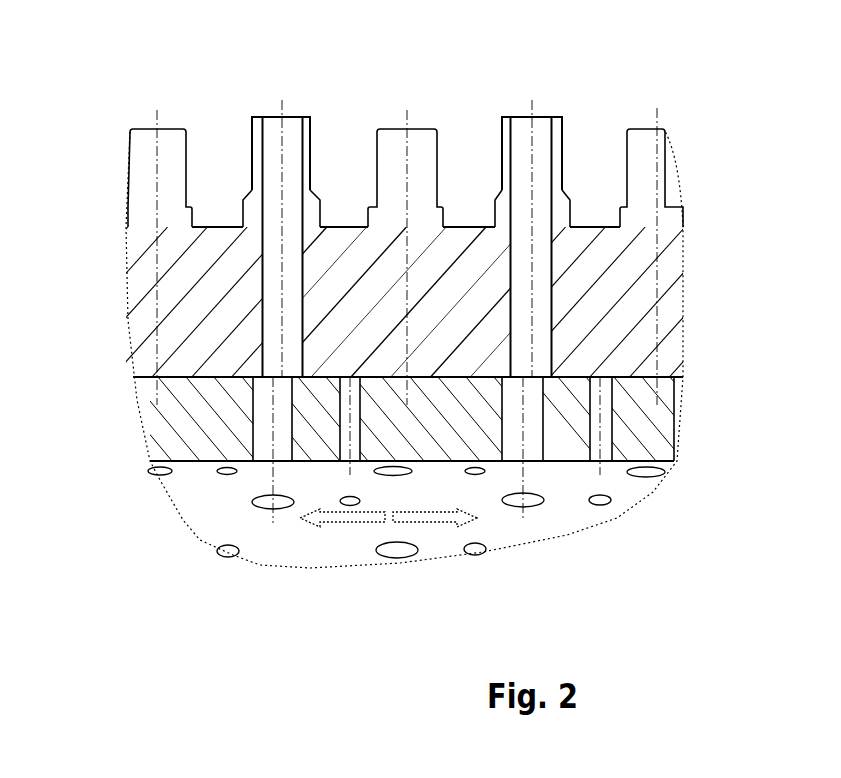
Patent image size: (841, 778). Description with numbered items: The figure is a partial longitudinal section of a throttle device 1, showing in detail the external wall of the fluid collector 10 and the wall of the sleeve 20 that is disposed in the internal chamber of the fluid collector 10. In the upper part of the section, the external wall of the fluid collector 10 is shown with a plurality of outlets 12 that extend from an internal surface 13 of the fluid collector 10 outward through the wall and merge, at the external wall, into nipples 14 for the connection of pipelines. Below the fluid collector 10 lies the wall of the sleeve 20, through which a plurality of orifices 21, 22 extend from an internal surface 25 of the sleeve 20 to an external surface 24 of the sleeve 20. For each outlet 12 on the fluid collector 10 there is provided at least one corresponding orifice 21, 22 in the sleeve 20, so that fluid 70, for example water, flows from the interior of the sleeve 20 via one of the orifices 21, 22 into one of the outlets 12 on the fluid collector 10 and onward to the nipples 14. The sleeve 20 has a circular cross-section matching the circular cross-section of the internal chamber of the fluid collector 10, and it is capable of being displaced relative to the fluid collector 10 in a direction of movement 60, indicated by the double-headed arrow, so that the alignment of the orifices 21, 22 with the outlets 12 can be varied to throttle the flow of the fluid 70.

The throttle device 1 is at (597, 95).
The fluid collector 10 is at (625, 280).
The outlets 12 is at (285, 203).
The internal surface of the fluid collector 13 is at (151, 377).
The nipples 14 is at (251, 146).
The sleeve 20 is at (658, 412).
The orifice 21 is at (262, 420).
The orifice 22 is at (341, 420).
The external surface of the sleeve 24 is at (160, 380).
The internal surface of the sleeve 25 is at (188, 460).
The direction of movement 60 is at (387, 517).
The fluid 70 is at (577, 512).